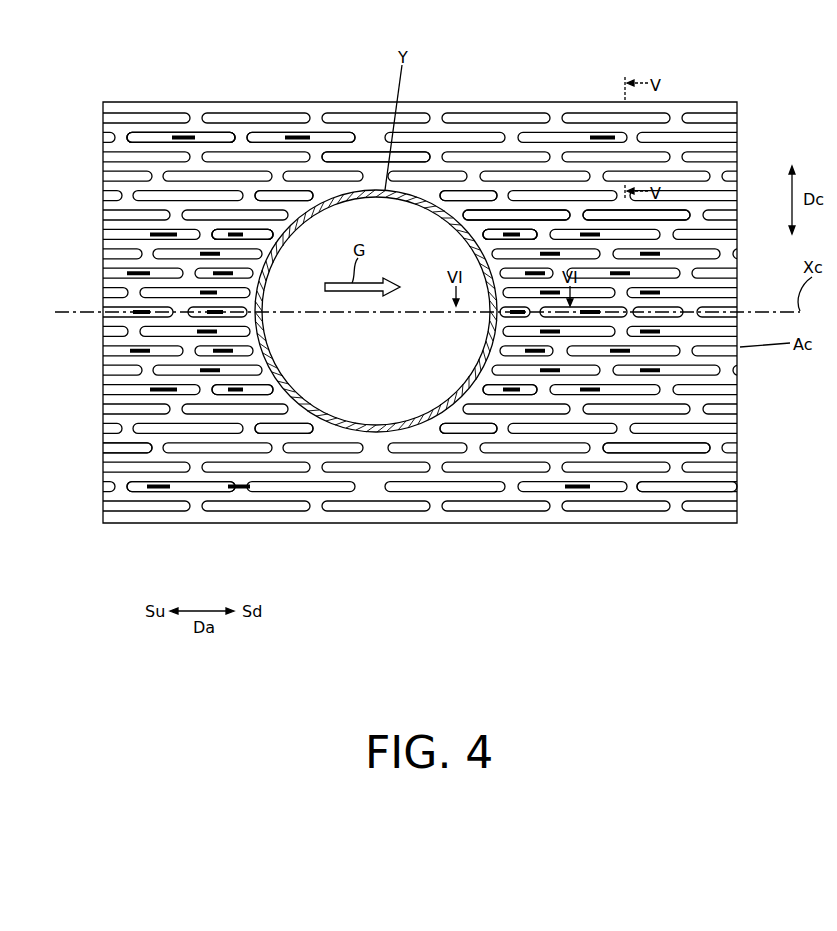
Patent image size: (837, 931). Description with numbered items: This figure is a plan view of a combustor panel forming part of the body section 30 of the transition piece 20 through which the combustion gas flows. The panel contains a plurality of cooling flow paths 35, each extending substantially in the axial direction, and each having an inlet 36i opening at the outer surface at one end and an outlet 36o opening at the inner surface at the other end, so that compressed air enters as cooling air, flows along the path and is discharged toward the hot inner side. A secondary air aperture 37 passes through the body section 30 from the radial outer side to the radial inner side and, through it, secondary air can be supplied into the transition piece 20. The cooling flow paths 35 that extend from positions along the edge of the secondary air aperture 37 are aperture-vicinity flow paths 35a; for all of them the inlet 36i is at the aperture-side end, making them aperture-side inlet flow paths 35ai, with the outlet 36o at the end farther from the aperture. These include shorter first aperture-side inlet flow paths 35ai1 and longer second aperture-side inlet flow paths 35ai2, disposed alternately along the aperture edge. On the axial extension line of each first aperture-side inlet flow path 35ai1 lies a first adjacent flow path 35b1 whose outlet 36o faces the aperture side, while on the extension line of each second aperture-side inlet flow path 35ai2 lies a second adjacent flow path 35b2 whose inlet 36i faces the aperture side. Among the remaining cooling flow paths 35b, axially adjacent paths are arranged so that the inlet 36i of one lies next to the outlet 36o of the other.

The transition piece 20 is at (421, 320).
The body section 30 is at (711, 97).
The cooling flow paths 35 is at (420, 258).
The aperture-vicinity flow paths 35a is at (403, 246).
The aperture-side inlet flow paths 35ai is at (411, 200).
The first aperture-side inlet flow paths 35ai1 is at (507, 273).
The second aperture-side inlet flow paths 35ai2 is at (528, 255).
The cooling flow paths except for the aperture-vicinity flow paths 35b is at (147, 142).
The first adjacent flow paths 35b1 is at (165, 448).
The second adjacent flow paths 35b2 is at (117, 487).
The inlet 36i is at (108, 138).
The outlet 36o is at (236, 137).
The secondary air aperture 37 is at (317, 405).